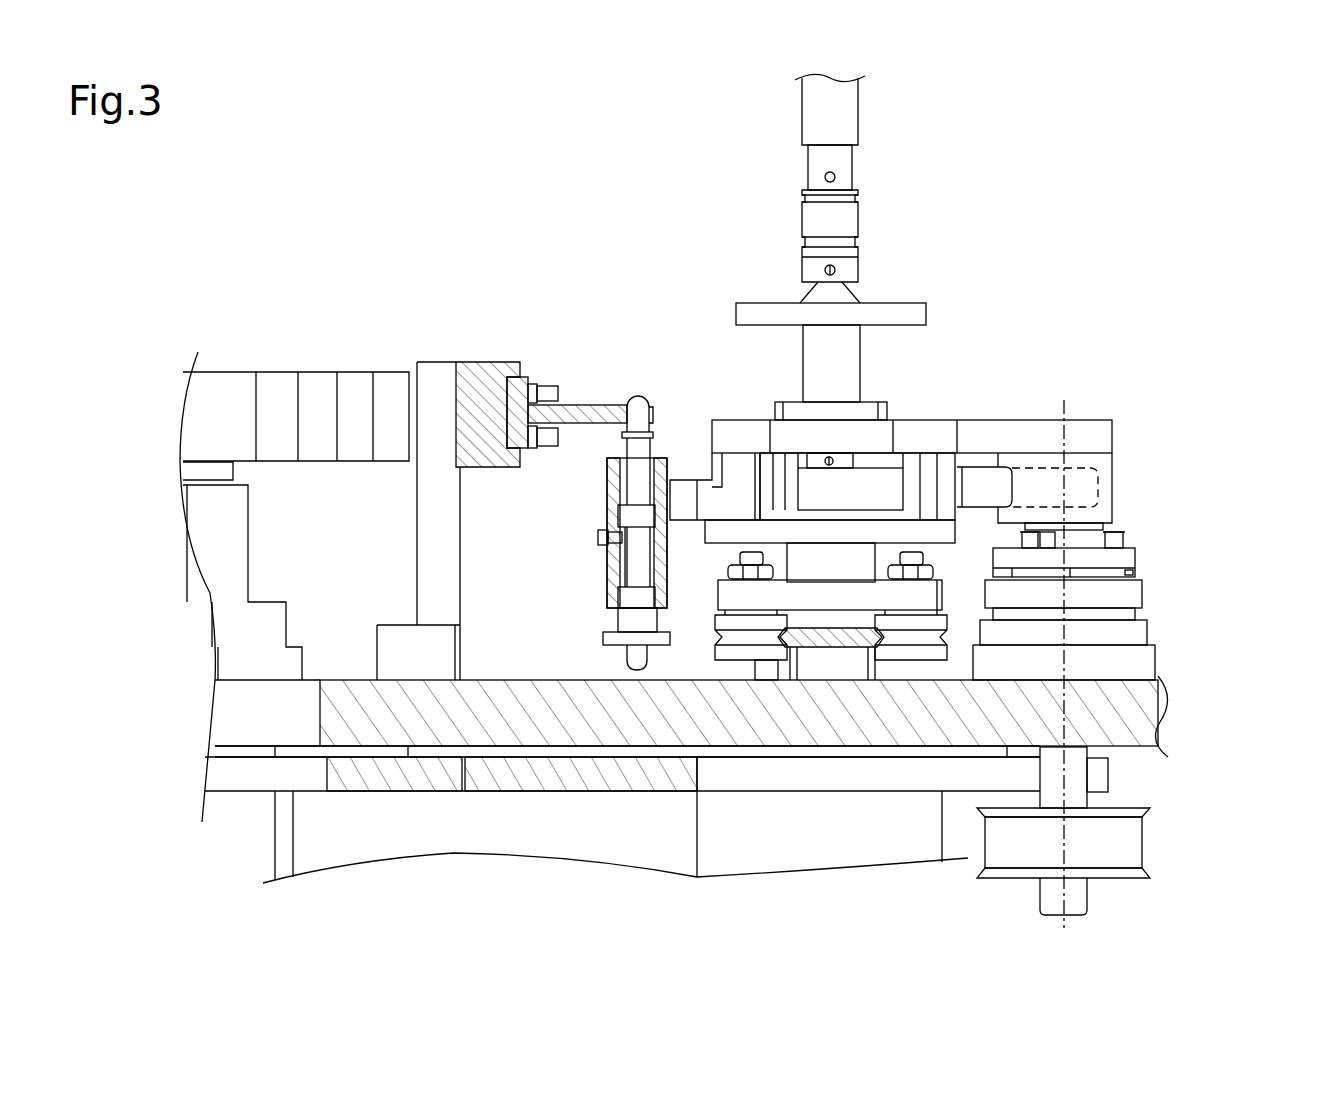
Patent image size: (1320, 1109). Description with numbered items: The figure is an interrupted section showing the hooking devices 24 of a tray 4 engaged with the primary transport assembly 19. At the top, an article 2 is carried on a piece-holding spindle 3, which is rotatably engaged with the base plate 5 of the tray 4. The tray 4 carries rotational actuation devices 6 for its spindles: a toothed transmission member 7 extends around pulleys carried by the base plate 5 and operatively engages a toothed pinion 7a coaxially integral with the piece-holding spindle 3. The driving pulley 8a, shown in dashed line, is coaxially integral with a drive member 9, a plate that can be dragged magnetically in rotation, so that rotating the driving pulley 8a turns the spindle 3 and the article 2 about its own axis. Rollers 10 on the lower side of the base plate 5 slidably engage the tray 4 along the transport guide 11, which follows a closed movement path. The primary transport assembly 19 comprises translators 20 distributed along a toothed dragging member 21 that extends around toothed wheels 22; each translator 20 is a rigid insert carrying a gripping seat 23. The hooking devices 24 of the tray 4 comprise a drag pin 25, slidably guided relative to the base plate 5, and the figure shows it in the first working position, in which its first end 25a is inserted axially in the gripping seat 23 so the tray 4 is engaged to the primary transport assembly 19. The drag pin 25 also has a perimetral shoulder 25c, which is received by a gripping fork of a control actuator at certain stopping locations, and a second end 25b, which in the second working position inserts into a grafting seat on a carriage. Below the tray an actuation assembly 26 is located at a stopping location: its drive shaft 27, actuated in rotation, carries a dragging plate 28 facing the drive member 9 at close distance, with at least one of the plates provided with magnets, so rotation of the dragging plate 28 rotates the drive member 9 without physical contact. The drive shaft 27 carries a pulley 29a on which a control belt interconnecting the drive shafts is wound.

The article 2 is at (845, 107).
The piece-holding spindle 3 is at (838, 222).
The tray 4 is at (980, 451).
The base plate 5 is at (1035, 432).
The rotational actuation devices 6 is at (873, 453).
The transmission member 7 is at (985, 485).
The toothed pinion 7a is at (843, 462).
The driving pulley 8a is at (1083, 462).
The drive member 9 is at (1133, 573).
The roller 10 is at (747, 652).
The transport guide 11 is at (843, 640).
The primary transport assembly 19 is at (362, 372).
The translator 20 is at (577, 415).
The dragging member 21 is at (517, 393).
The toothed wheel 22 is at (310, 372).
The gripping seat 23 is at (622, 397).
The hooking devices 24 is at (670, 440).
The drag pin 25 is at (636, 478).
The first end 25a is at (640, 395).
The second end 25b is at (627, 668).
The perimetral shoulder 25c is at (602, 640).
The actuation assembly 26 is at (1158, 612).
The drive shaft 27 is at (1073, 778).
The dragging plate 28 is at (1132, 593).
The pulley 29a is at (1120, 877).